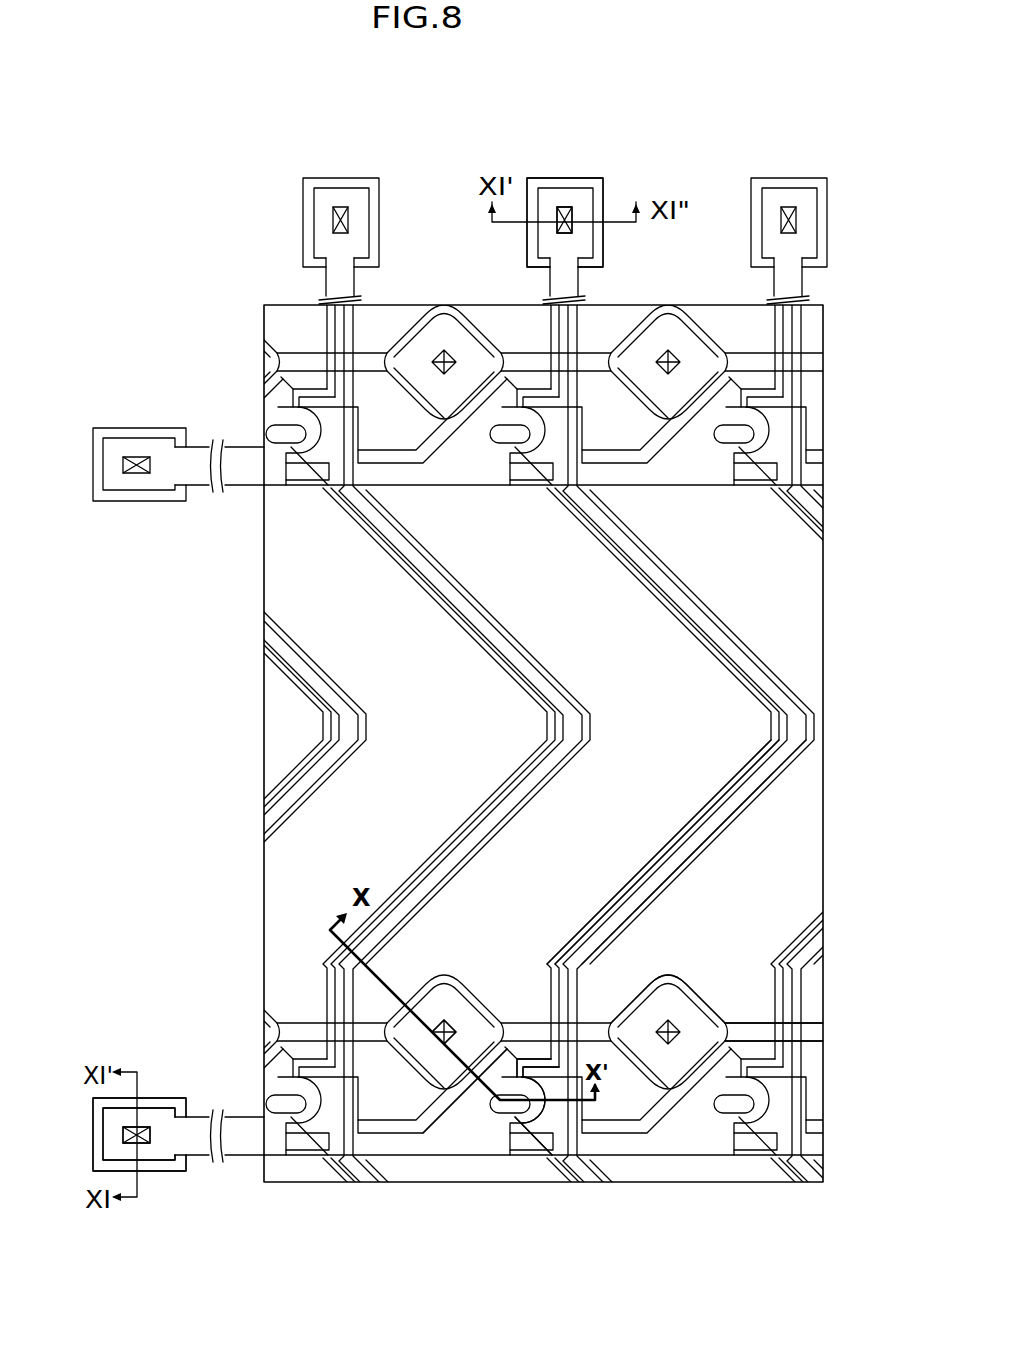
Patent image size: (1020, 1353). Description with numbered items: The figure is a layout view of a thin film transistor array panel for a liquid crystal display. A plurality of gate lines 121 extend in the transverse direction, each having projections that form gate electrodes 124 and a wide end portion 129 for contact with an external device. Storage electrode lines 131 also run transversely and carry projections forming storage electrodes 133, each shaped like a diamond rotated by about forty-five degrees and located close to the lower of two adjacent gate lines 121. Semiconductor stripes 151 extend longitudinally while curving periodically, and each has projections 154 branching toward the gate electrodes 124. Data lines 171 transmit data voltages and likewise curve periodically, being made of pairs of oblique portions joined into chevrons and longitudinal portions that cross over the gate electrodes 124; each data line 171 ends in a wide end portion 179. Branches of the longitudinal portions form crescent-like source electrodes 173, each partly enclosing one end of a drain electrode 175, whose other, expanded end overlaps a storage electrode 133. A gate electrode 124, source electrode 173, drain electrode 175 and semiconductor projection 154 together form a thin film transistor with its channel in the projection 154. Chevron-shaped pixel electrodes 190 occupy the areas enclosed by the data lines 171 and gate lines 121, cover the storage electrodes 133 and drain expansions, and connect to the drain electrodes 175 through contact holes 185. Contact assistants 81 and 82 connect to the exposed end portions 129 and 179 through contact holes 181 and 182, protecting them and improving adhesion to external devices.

The contact assistant 82 is at (603, 179).
The contact hole 182 is at (564, 207).
The end portion of data line 179 is at (594, 243).
The contact assistant 81 is at (93, 1148).
The contact hole 181 is at (128, 1135).
The end portion of gate line 129 is at (160, 1168).
The gate line 121 is at (412, 1157).
The gate electrode 124 is at (490, 1155).
The storage electrode line 131 is at (736, 1022).
The storage electrode 133 is at (690, 978).
The semiconductor stripe 151 is at (700, 830).
The projection of semiconductor stripe 154 is at (466, 1158).
The data line 171 is at (658, 878).
The source electrode 173 is at (528, 1068).
The drain electrode 175 is at (468, 982).
The contact hole 185 is at (436, 1003).
The pixel electrode 190 is at (740, 773).